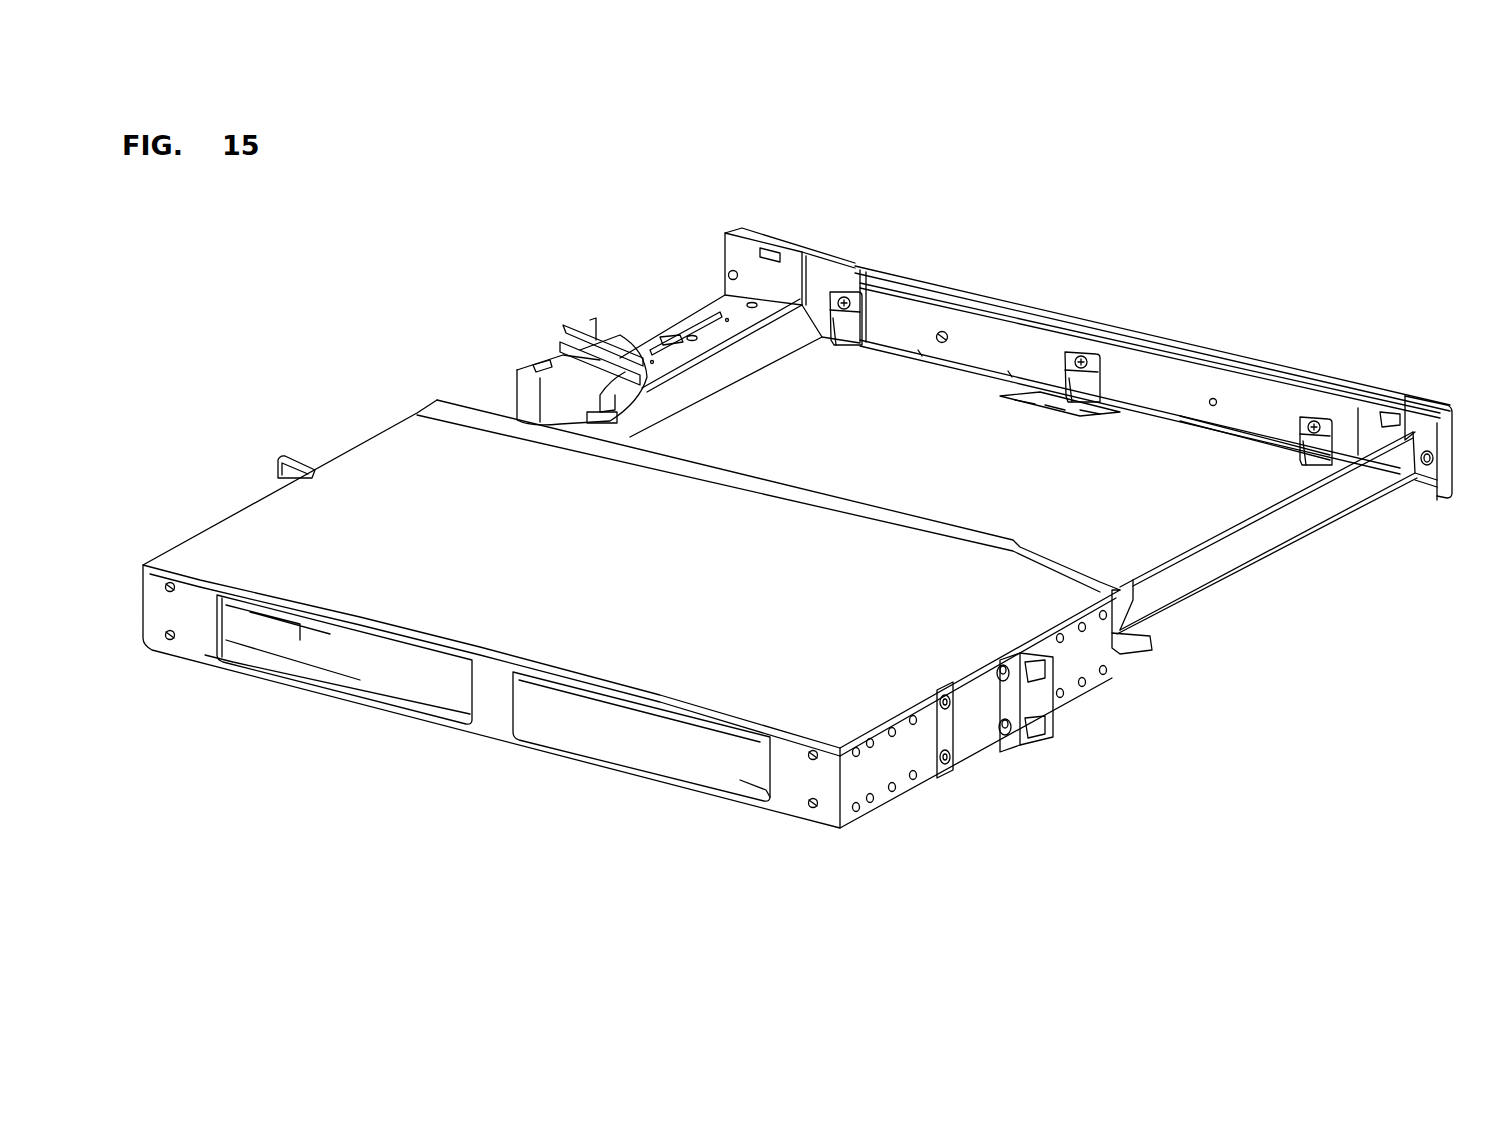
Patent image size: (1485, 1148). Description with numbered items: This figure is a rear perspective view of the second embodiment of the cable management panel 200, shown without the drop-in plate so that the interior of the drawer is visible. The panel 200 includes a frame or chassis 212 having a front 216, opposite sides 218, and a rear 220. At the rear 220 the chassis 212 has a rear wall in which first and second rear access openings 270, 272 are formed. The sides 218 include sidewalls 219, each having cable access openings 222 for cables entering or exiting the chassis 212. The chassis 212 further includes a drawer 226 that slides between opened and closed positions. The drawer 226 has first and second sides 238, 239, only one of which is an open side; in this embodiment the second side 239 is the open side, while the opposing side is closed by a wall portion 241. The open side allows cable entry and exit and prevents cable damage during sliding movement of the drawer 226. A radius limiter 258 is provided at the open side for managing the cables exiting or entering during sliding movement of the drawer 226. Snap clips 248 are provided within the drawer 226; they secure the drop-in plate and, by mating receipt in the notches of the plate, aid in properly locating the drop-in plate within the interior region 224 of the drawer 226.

The cable management panel 200 is at (592, 208).
The chassis 212 is at (285, 547).
The front 216 is at (1083, 263).
The sides 218 is at (1108, 762).
The sidewalls 219 is at (1078, 650).
The rear 220 is at (470, 790).
The cable access openings 222 is at (356, 409).
The interior region 224 is at (930, 462).
The drawer 226 is at (1195, 347).
The first side 238 is at (1285, 548).
The second side 239 is at (638, 297).
The wall portion 241 is at (1298, 522).
The snap clips 248 is at (842, 337).
The radius limiter 258 is at (548, 362).
The first rear access opening 270 is at (612, 700).
The second rear access opening 272 is at (372, 637).